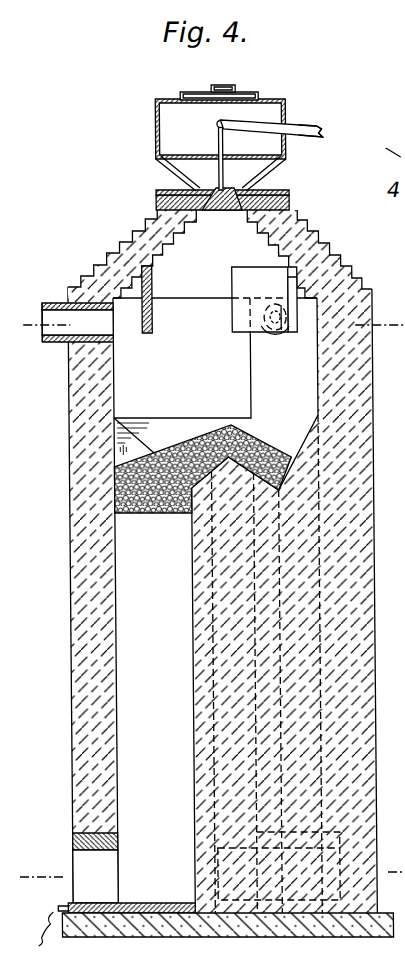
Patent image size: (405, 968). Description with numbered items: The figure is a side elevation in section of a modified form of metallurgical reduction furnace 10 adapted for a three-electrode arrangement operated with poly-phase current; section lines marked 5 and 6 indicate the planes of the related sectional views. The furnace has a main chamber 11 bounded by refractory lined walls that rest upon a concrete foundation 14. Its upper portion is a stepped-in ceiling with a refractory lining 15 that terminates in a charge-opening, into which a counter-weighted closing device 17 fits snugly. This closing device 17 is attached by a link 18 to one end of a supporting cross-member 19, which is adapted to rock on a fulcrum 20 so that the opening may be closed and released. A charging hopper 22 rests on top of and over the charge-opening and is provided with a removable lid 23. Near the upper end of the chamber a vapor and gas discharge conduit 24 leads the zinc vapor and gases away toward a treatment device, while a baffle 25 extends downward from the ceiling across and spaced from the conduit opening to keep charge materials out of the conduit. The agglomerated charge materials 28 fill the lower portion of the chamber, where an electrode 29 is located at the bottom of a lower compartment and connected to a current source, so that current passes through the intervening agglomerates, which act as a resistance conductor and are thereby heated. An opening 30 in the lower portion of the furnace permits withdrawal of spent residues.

The reduction furnace 10 is at (68, 565).
The main chamber 11 is at (215, 376).
The concrete foundation 14 is at (227, 937).
The refractory lining 15 is at (171, 246).
The counter-weighted closing device 17 is at (216, 189).
The link 18 is at (225, 145).
The supporting cross-member 19 is at (325, 124).
The fulcrum 20 is at (291, 127).
The charging hopper 22 is at (156, 129).
The removable lid 23 is at (192, 92).
The vapor and gas discharge conduit 24 is at (53, 303).
The baffle 25 is at (149, 337).
The agglomerated charge materials 28 is at (268, 440).
The electrode 29 is at (118, 910).
The opening for withdrawal of spent residues 30 is at (78, 887).
The section line 5- 5 is at (27, 321).
The section line 6- 6 is at (397, 850).